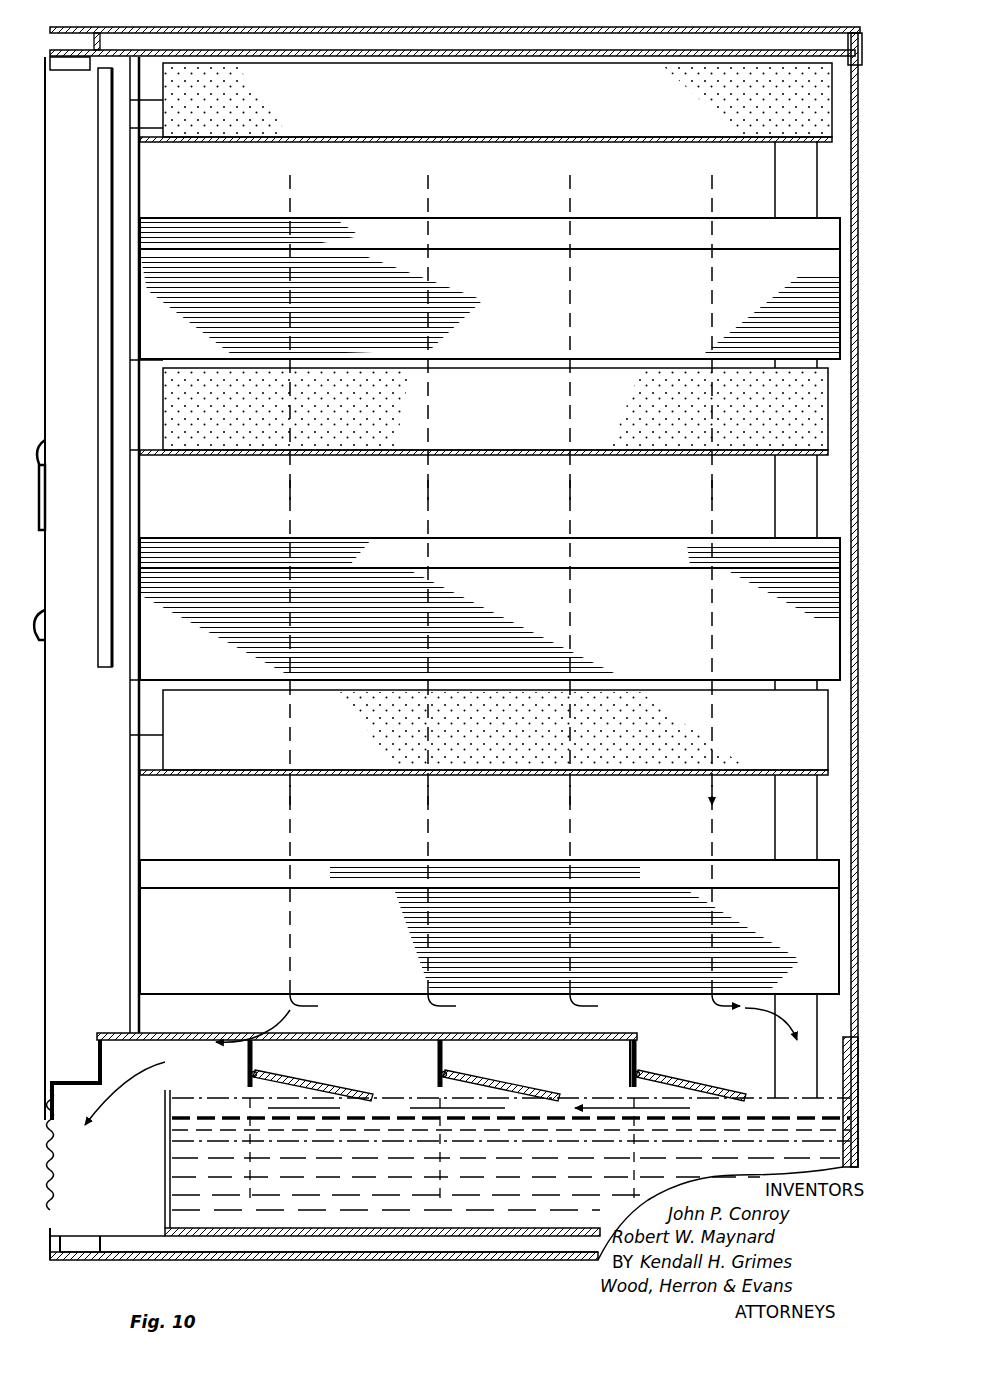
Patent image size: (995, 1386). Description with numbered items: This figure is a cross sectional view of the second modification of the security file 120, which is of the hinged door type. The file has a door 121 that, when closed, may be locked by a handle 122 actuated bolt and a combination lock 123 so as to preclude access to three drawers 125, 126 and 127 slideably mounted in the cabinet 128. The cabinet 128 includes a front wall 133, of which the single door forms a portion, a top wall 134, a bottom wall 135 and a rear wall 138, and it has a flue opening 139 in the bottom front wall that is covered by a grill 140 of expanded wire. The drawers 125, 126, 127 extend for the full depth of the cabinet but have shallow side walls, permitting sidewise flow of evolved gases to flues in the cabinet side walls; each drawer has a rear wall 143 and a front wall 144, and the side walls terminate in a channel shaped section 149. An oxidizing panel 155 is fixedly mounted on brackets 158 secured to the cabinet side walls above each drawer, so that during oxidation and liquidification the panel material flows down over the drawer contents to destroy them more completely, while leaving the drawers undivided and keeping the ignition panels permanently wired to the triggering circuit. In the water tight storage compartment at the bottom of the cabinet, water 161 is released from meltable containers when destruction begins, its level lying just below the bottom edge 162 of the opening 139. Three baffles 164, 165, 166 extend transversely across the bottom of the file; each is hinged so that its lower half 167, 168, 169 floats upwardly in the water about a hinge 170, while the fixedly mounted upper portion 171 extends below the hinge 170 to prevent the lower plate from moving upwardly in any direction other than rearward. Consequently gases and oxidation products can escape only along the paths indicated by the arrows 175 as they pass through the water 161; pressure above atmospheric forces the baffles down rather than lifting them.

The file 120 is at (883, 66).
The door 121 is at (78, 588).
The handle 122 is at (58, 620).
The combination lock 123 is at (60, 477).
The drawer 125 is at (490, 288).
The drawer 126 is at (490, 609).
The drawer 127 is at (489, 927).
The cabinet 128 is at (858, 284).
The front wall 133 is at (45, 1262).
The top wall 134 is at (504, 28).
The bottom wall 135 is at (519, 1262).
The rear wall 138 is at (900, 548).
The flue opening 139 is at (44, 1150).
The grill 140 is at (344, 1076).
The rear wall 143 is at (838, 262).
The front wall 144 is at (140, 166).
The channel shaped section 149 is at (230, 876).
The oxidizing panel 155 is at (497, 416).
The bracket 158 is at (386, 143).
The water 161 is at (507, 1135).
The bottom edge 162 is at (56, 1202).
The baffle 164 is at (254, 1052).
The baffle 165 is at (445, 1052).
The baffle 166 is at (639, 1050).
The lower half 167 is at (312, 1084).
The lower half 168 is at (512, 1084).
The lower half 169 is at (698, 1088).
The hinge 170 is at (251, 1074).
The upper portion 171 is at (252, 1084).
The arrows 175 is at (706, 800).